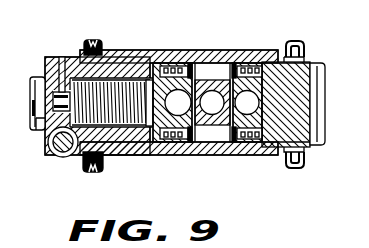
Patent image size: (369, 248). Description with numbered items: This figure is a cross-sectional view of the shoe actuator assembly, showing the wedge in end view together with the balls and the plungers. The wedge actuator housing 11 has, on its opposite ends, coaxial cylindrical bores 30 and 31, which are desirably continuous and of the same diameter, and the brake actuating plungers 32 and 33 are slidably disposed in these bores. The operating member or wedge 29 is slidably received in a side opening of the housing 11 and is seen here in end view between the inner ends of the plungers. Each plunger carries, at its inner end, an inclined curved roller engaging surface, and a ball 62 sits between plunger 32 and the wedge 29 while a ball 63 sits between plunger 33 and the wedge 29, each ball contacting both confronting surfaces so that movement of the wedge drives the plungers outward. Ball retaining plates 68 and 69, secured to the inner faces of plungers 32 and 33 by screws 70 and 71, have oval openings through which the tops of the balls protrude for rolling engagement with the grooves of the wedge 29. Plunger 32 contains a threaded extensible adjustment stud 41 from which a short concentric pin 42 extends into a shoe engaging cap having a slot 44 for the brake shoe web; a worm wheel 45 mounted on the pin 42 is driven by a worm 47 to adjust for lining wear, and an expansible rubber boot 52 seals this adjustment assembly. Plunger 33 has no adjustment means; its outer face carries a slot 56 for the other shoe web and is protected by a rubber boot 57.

The wedge actuator housing 11 is at (173, 58).
The operating member or wedge 29 is at (208, 127).
The cylindrical bore 30 is at (167, 58).
The cylindrical bore 31 is at (284, 161).
The brake actuating member or plunger 32 is at (141, 54).
The brake actuating member or plunger 33 is at (272, 57).
The threaded extensible adjustment stud 41 is at (113, 88).
The concentric pin or shaft 42 is at (43, 80).
The slot 44 is at (41, 129).
The worm wheel 45 is at (58, 62).
The worm 47 is at (55, 153).
The rubber bellows or boot 52 is at (88, 38).
The slot 56 is at (322, 89).
The rubber boot 57 is at (306, 46).
The roller or ball 62 is at (150, 157).
The roller or ball 63 is at (258, 143).
The ball retaining plate 68 is at (193, 72).
The ball retaining plate 69 is at (222, 78).
The screw 70 is at (190, 72).
The screw 71 is at (250, 66).